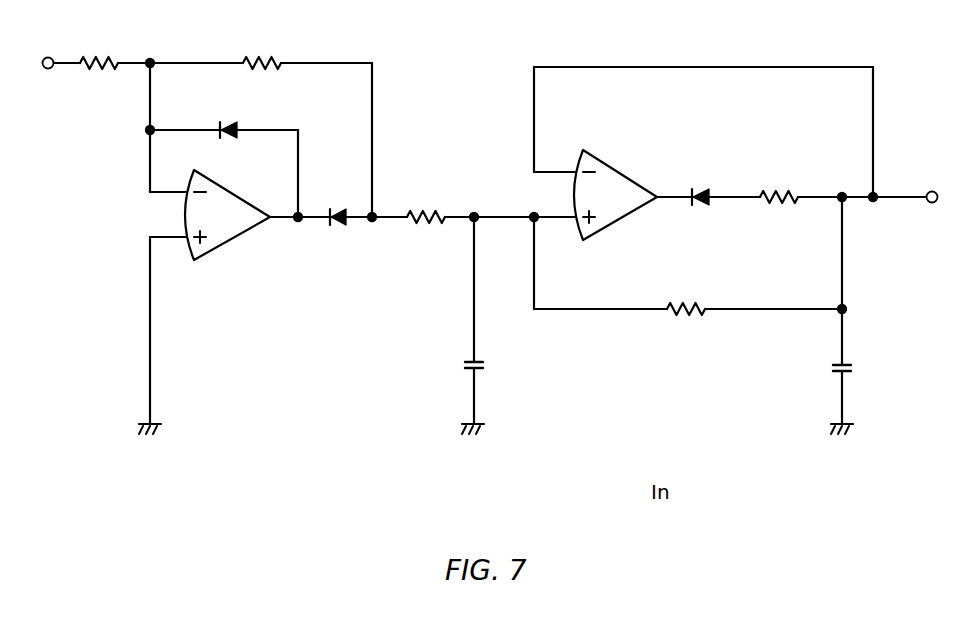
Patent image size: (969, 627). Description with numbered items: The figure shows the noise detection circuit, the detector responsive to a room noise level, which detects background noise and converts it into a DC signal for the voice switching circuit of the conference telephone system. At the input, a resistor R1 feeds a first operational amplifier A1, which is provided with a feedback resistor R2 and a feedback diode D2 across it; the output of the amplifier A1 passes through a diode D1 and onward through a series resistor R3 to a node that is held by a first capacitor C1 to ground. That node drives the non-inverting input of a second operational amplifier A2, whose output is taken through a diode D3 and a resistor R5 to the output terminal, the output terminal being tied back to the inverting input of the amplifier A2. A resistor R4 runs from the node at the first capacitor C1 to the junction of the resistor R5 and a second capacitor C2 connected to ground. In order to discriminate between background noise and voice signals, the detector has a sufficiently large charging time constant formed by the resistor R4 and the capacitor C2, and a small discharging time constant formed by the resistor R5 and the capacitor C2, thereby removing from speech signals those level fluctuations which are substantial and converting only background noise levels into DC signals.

The input resistor R1 is at (99, 49).
The feedback resistor R2 is at (262, 49).
The series resistor R3 is at (426, 203).
The charging resistor R4 is at (688, 296).
The discharging resistor R5 is at (779, 184).
The diode D1 is at (335, 204).
The diode D2 is at (224, 117).
The diode D3 is at (699, 185).
The operational amplifier A1 is at (210, 215).
The operational amplifier A2 is at (595, 195).
The capacitor C1 is at (487, 320).
The capacitor C2 is at (854, 310).